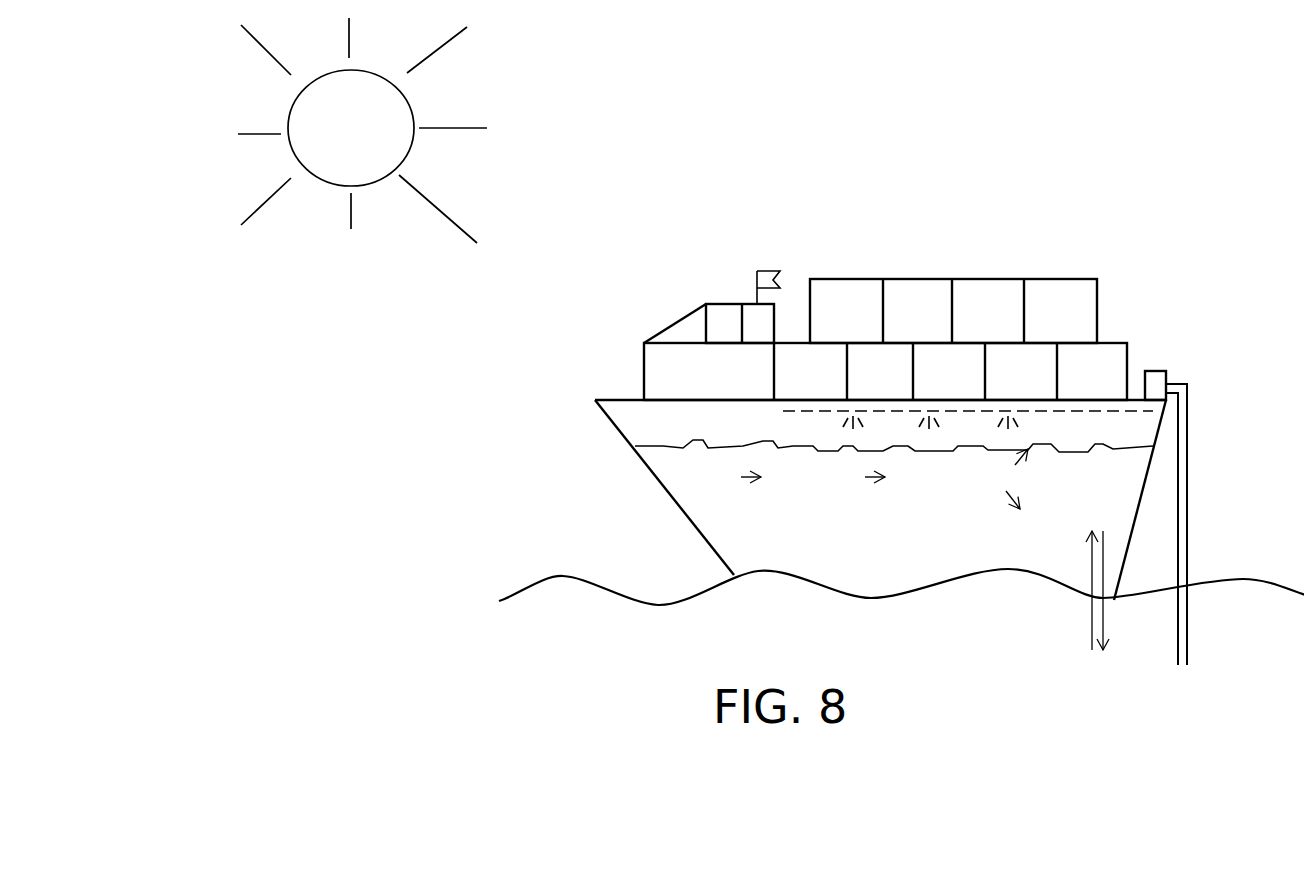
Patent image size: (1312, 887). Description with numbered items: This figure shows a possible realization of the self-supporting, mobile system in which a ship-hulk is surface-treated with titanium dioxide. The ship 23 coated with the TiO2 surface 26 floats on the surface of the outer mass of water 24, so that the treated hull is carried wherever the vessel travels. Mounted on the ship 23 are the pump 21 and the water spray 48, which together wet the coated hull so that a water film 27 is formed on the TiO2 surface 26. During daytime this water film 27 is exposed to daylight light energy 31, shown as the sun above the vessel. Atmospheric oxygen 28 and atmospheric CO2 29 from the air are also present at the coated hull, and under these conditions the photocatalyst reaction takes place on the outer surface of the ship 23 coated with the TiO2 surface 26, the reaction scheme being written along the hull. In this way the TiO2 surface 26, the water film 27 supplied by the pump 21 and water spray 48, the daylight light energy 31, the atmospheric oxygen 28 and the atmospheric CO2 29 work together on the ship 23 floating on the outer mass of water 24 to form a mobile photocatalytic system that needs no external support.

The pump 21 is at (1185, 355).
The ship 23 is at (1136, 449).
The outer mass of water 24 is at (959, 489).
The TiO2 surface 26 is at (672, 478).
The water film 27 is at (1106, 538).
The atmospheric oxygen 28 is at (823, 456).
The atmospheric CO2 29 is at (1168, 524).
The daylight light energy 31 is at (690, 450).
The water spray 48 is at (953, 411).